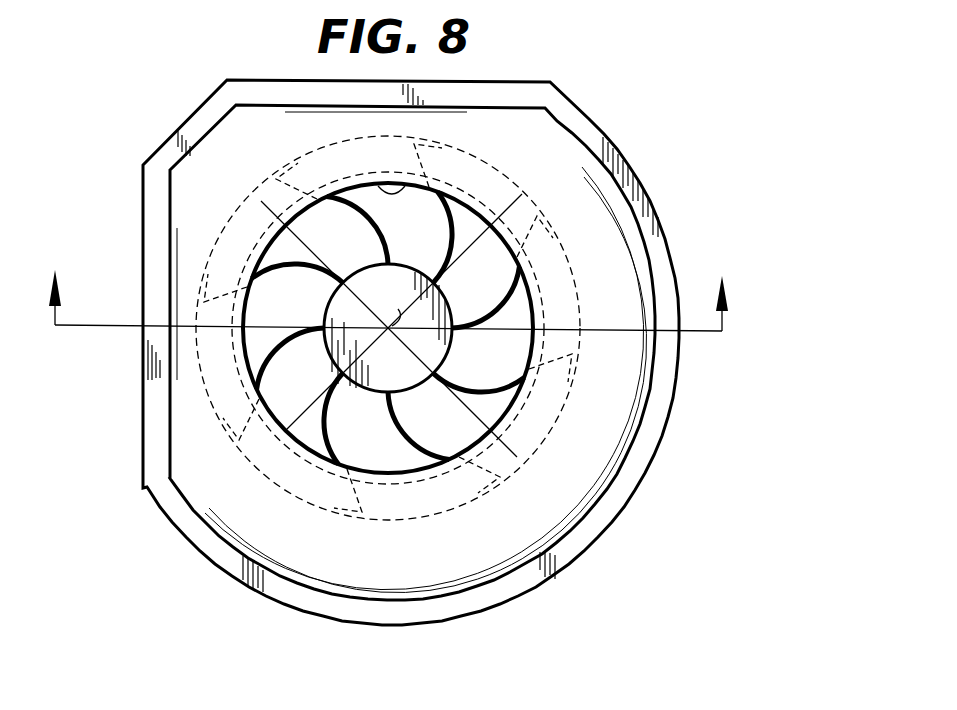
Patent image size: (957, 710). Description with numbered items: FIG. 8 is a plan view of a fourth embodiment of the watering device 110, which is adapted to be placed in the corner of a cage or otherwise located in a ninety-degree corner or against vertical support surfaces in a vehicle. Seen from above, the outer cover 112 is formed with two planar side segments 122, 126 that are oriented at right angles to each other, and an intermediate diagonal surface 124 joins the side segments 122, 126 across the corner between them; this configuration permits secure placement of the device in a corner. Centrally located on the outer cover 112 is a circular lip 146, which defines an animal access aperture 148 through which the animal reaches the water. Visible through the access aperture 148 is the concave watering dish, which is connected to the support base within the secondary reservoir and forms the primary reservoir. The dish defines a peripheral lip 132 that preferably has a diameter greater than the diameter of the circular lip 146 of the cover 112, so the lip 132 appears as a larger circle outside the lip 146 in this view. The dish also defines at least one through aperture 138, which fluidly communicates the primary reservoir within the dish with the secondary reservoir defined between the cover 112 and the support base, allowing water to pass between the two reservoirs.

The blower assembly 110 is at (728, 100).
The outer cover 112 is at (660, 438).
The planar side segment 122 is at (143, 230).
The intermediate diagonal surface 124 is at (187, 115).
The planar side segment 126 is at (265, 80).
The peripheral lip 132 is at (570, 253).
The through aperture 138 is at (472, 353).
The circular lip 146 is at (363, 178).
The animal access aperture 148 is at (497, 262).